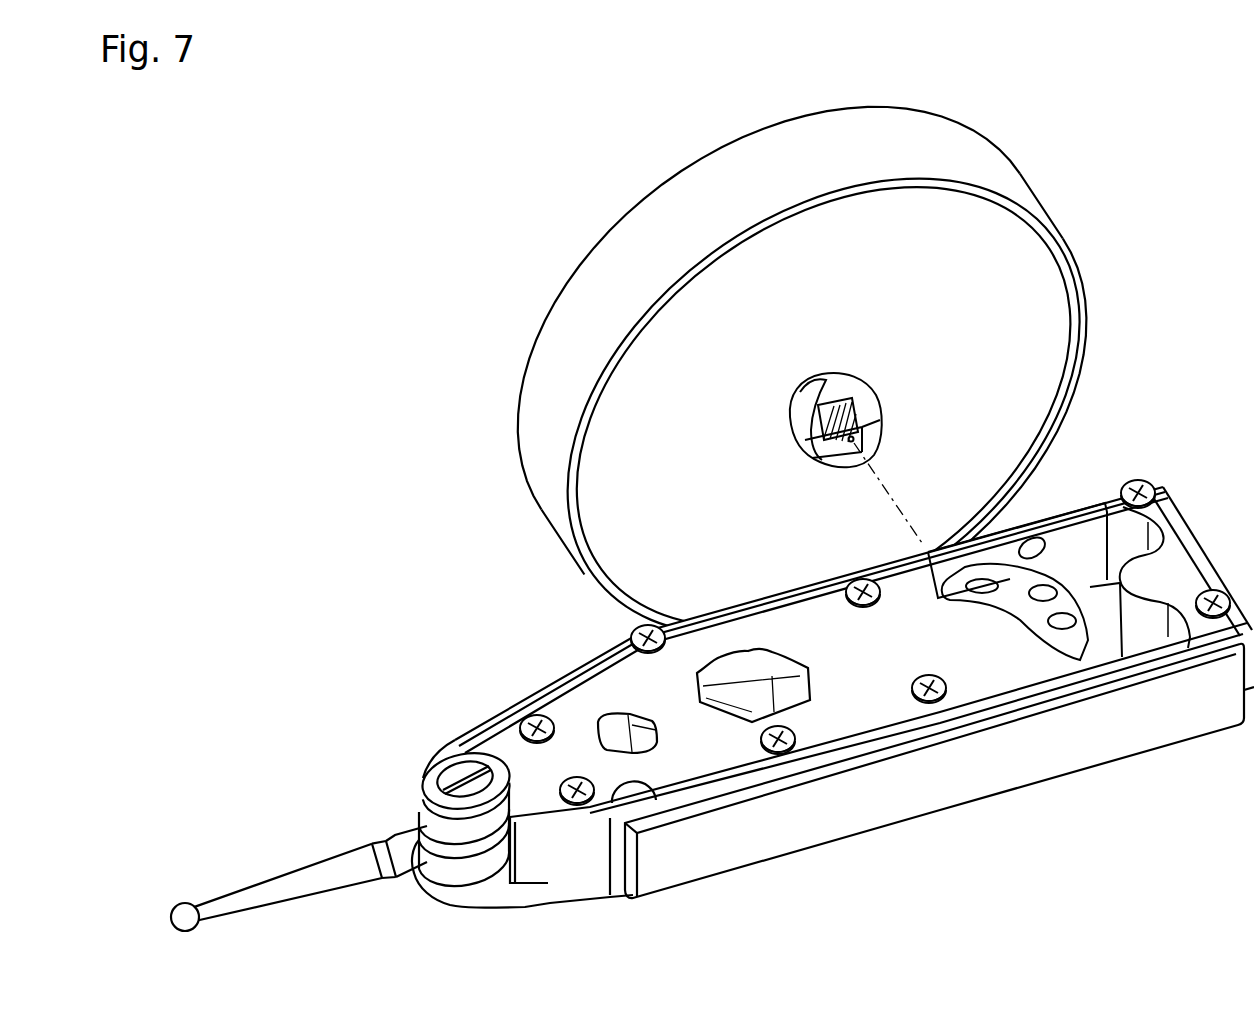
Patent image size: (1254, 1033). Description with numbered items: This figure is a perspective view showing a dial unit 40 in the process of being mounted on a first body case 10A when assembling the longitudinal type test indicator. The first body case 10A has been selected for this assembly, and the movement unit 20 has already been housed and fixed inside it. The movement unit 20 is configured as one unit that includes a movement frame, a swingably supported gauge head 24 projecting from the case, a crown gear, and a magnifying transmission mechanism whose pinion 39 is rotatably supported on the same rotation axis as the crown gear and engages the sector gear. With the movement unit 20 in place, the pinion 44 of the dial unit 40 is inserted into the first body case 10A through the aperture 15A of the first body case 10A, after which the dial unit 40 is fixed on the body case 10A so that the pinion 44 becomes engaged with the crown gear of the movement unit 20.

The dial unit 40 is at (983, 152).
The pinion 44 is at (852, 389).
The aperture 15A is at (973, 570).
The pinion 39 is at (1073, 600).
The gauge head 24 is at (283, 883).
The movement unit 20 is at (857, 713).
The first body case 10A is at (1082, 758).